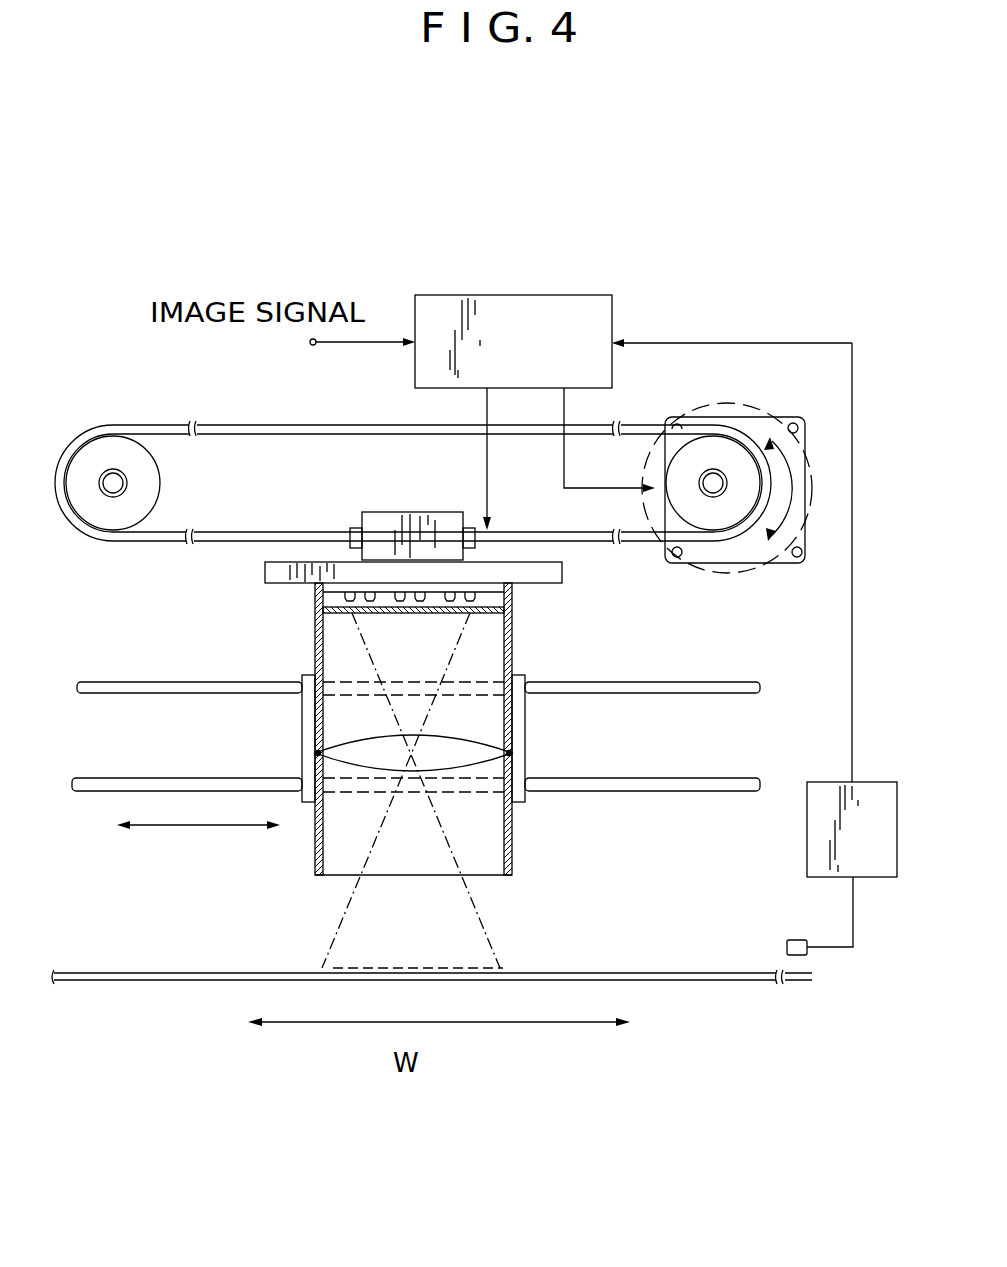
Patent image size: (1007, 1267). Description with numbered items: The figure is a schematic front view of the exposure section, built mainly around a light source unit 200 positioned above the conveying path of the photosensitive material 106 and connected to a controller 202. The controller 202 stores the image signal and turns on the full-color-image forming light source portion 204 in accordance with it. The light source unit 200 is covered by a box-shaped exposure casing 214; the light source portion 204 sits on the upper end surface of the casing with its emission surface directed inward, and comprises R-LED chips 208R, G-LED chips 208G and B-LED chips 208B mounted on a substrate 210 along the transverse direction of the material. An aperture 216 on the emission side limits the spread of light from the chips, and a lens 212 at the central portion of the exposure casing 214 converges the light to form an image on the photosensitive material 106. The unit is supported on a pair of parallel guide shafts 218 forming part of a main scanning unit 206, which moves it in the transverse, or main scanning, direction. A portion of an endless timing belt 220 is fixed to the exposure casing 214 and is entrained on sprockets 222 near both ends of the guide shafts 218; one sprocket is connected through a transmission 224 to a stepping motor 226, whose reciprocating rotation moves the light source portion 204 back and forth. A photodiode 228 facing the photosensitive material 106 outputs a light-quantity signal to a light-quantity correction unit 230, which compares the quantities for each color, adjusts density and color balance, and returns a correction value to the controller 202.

The photosensitive material 106 is at (687, 973).
The light source unit 200 is at (530, 638).
The controller 202 is at (612, 322).
The full-color-image forming light source portion 204 is at (330, 599).
The main scanning unit 206 is at (136, 560).
The R-LED chip 208R is at (370, 602).
The G-LED chip 208G is at (420, 601).
The B-LED chip 208B is at (450, 601).
The substrate 210 is at (512, 597).
The lens 212 is at (365, 760).
The exposure casing 214 is at (512, 835).
The aperture 216 is at (350, 602).
The guide shafts 218 is at (665, 778).
The timing belt 220 is at (292, 528).
The sprockets 222 is at (153, 480).
The transmission 224 is at (758, 552).
The stepping motor 226 is at (727, 572).
The photodiode 228 is at (807, 950).
The light-quantity correction unit 230 is at (833, 877).